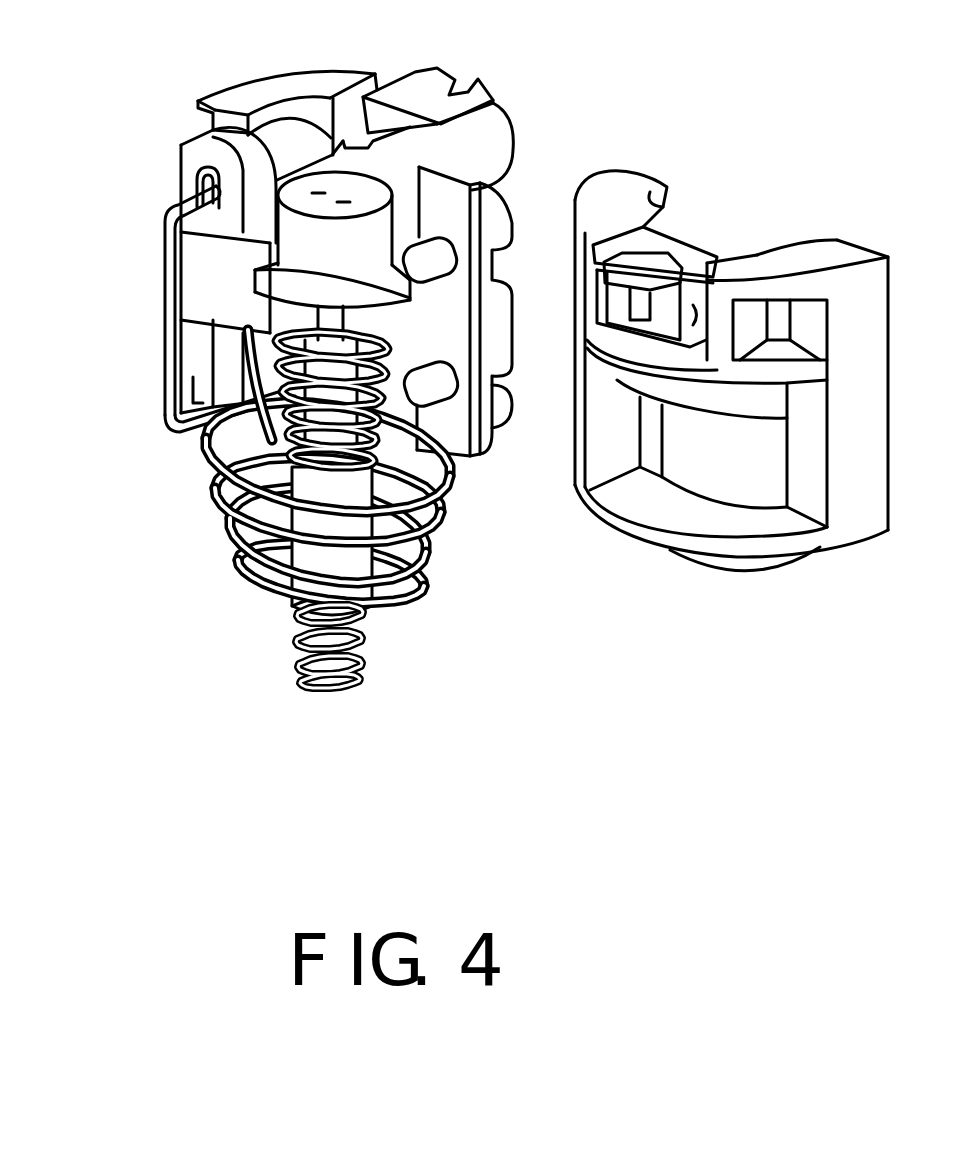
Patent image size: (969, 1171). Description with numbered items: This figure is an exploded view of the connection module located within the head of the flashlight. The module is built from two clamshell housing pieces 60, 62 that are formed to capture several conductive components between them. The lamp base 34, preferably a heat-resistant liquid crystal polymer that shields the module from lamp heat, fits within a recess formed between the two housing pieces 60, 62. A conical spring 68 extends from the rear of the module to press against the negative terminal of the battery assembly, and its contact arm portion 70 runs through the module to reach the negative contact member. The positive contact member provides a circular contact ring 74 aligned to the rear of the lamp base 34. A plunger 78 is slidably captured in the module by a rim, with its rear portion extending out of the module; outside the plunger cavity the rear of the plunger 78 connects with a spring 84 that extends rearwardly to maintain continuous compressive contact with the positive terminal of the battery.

The clamshell housing piece 60 is at (293, 73).
The clamshell housing piece 62 is at (627, 183).
The lamp base 34 is at (332, 318).
The contact arm portion 70 is at (164, 313).
The circular contact ring 74 is at (272, 338).
The plunger 78 is at (368, 414).
The conical spring 68 is at (428, 553).
The spring 84 is at (365, 645).